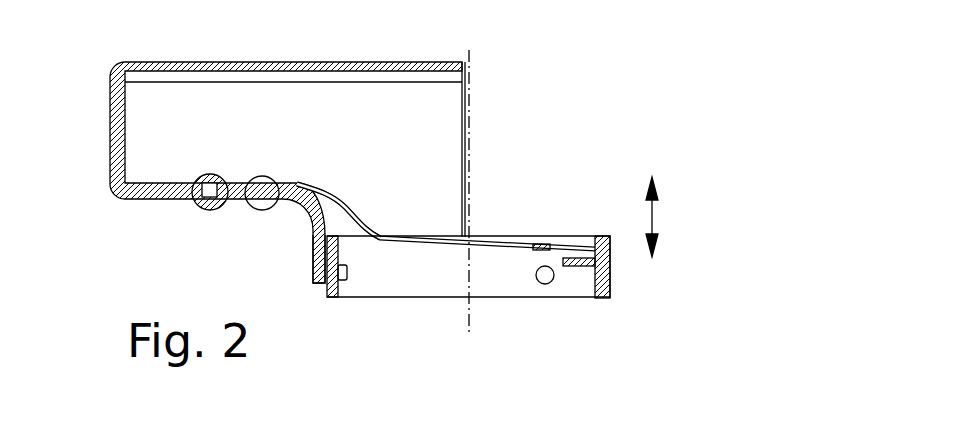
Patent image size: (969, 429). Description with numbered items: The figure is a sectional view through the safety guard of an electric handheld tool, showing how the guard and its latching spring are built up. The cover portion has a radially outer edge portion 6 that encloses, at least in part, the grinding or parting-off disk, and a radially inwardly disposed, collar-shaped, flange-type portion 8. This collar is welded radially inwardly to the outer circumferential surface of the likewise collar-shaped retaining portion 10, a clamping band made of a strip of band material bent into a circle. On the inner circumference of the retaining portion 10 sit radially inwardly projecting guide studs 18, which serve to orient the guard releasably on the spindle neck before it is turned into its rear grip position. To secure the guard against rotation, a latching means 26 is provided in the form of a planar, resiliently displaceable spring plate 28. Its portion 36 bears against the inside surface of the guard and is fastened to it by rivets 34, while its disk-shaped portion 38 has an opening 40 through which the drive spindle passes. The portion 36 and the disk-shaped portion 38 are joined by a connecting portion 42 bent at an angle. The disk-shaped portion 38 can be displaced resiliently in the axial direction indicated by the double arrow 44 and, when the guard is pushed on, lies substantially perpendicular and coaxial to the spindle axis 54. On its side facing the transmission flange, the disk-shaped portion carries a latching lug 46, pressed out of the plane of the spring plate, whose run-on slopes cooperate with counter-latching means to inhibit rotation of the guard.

The radially outer edge portion 6 is at (112, 124).
The collar-shaped flange-type portion 8 is at (313, 258).
The collar-shaped retaining portion 10 is at (332, 298).
The guide studs 18 is at (345, 280).
The latching means 26 is at (570, 202).
The spring plate 28 is at (541, 243).
The rivets 34 is at (205, 212).
The portion 36 is at (233, 183).
The disk-shaped portion 38 is at (385, 235).
The opening 40 is at (430, 236).
The connecting portion 42 is at (355, 197).
The double arrow 44 is at (652, 217).
The latching lug 46 is at (583, 267).
The spindle axis 54 is at (470, 102).